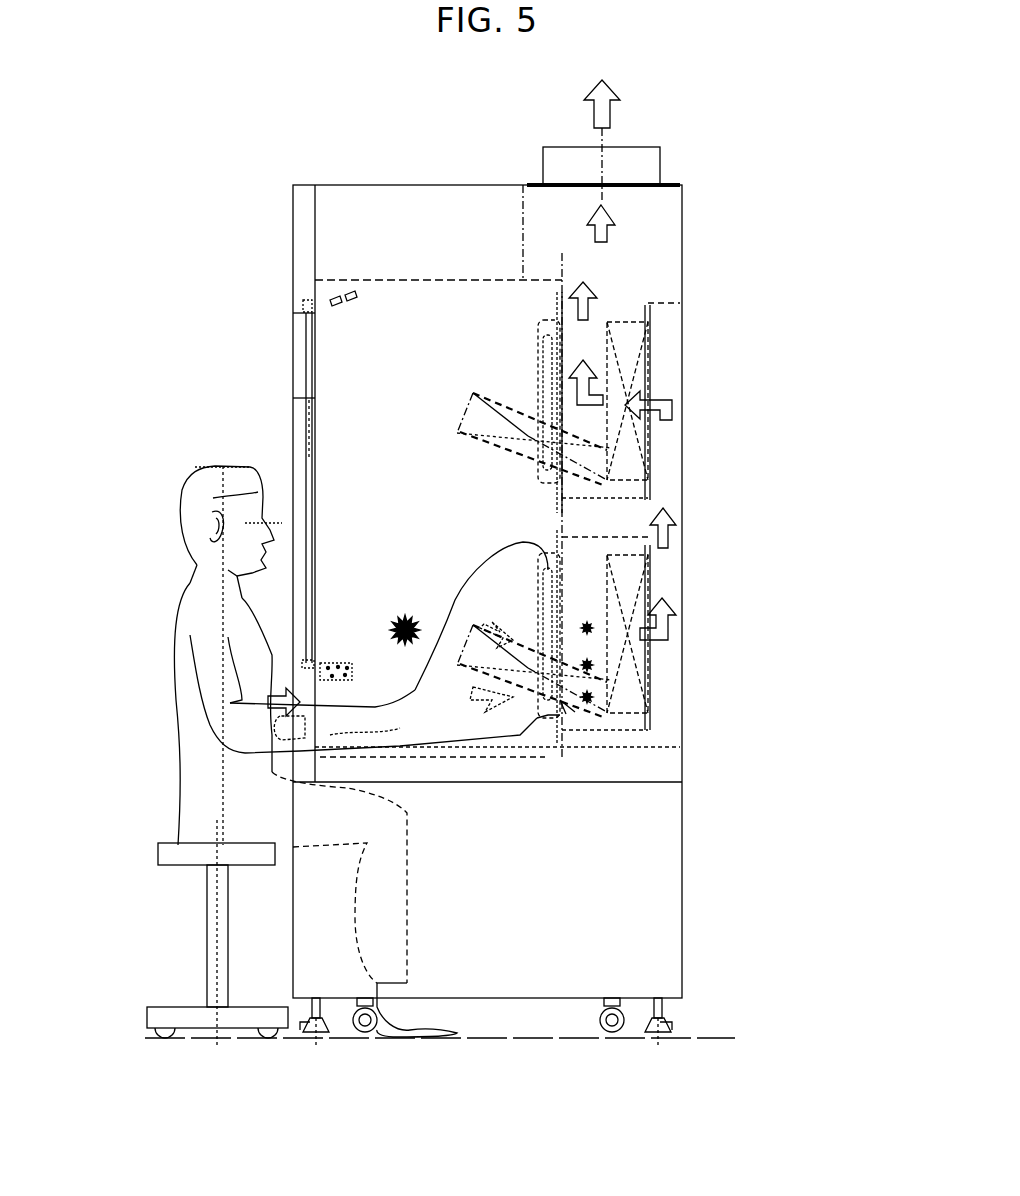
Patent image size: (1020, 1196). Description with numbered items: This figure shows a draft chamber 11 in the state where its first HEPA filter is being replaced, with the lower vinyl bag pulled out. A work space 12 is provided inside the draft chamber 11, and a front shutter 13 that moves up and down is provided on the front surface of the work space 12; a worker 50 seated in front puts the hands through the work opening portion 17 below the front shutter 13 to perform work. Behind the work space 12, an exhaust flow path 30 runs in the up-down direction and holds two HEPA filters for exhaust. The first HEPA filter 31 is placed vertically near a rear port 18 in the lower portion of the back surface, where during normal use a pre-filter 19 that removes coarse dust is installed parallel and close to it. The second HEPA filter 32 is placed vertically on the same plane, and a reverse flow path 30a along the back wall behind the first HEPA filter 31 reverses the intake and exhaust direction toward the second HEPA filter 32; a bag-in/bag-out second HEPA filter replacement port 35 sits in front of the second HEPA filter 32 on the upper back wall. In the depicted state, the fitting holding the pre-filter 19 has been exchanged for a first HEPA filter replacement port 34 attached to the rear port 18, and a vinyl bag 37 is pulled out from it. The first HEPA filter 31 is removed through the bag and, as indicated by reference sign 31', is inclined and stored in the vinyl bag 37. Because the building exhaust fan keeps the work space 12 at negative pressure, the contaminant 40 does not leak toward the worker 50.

The draft chamber 11 is at (377, 178).
The work space 12 is at (375, 407).
The front shutter 13 is at (300, 470).
The work opening portion 17 is at (322, 670).
The rear port 18 is at (565, 712).
The pre-filter 19 is at (548, 715).
The exhaust flow path 30 is at (652, 225).
The reverse flow path 30a is at (673, 548).
The first HEPA filter 31 is at (703, 634).
The first HEPA filter in inclined state 31' is at (678, 694).
The second HEPA filter 32 is at (627, 380).
The first HEPA filter replacement port 34 is at (543, 578).
The second HEPA filter replacement port 35 is at (548, 343).
The vinyl bag 37 is at (412, 683).
The contaminant 40 is at (392, 625).
The worker 50 is at (180, 580).